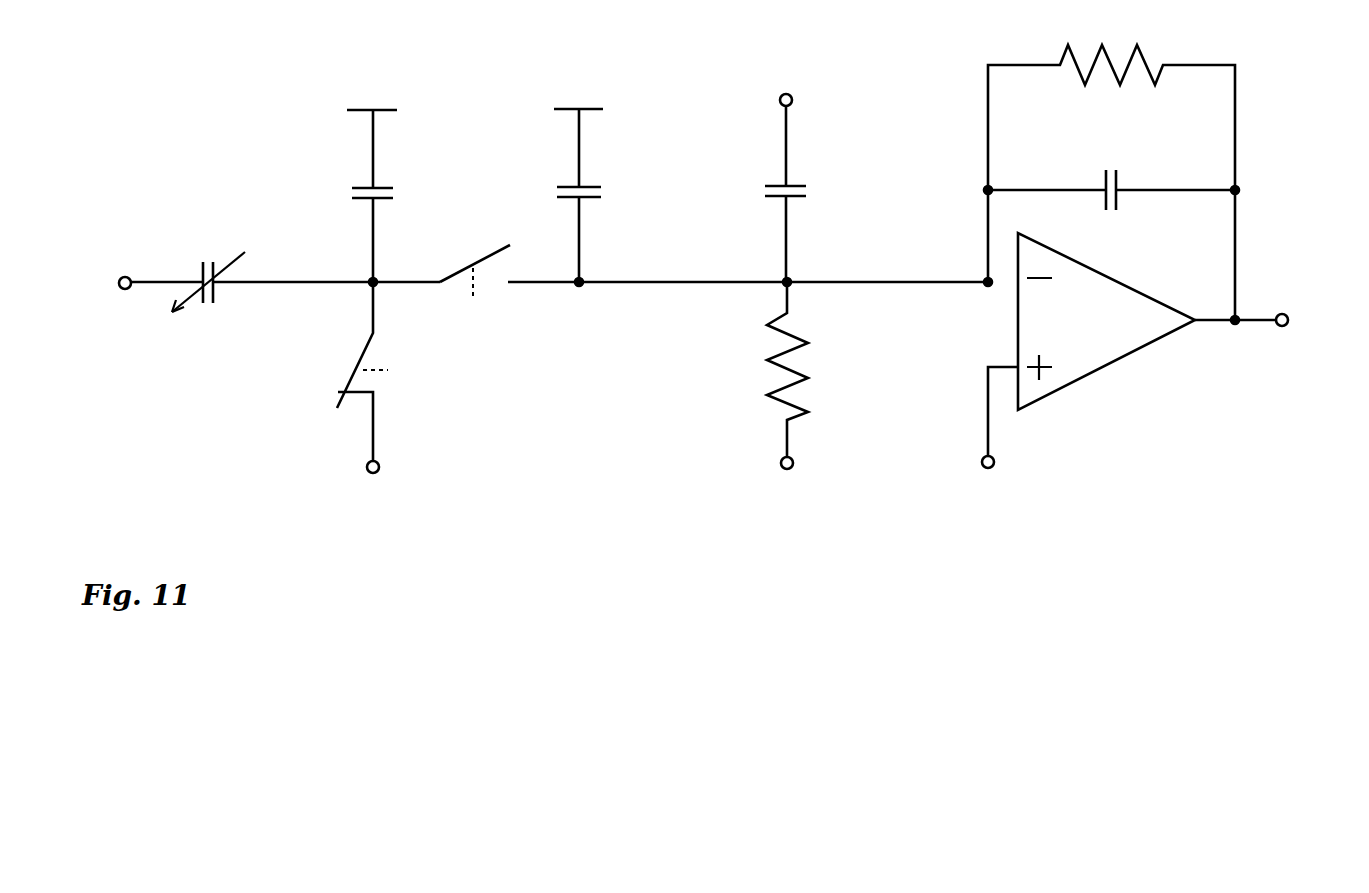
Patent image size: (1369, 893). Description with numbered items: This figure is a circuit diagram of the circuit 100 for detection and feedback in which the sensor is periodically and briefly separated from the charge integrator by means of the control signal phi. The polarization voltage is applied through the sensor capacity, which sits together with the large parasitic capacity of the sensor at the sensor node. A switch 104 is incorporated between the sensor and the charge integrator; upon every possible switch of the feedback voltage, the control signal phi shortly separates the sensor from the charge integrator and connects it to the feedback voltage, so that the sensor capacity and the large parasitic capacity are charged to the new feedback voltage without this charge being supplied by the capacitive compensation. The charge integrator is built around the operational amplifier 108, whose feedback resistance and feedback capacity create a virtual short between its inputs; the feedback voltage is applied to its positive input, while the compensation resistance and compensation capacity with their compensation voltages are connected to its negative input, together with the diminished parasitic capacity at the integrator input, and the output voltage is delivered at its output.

The circuit 100 is at (703, 307).
The switch 104 is at (358, 362).
The operational amplifier 108 is at (1098, 373).